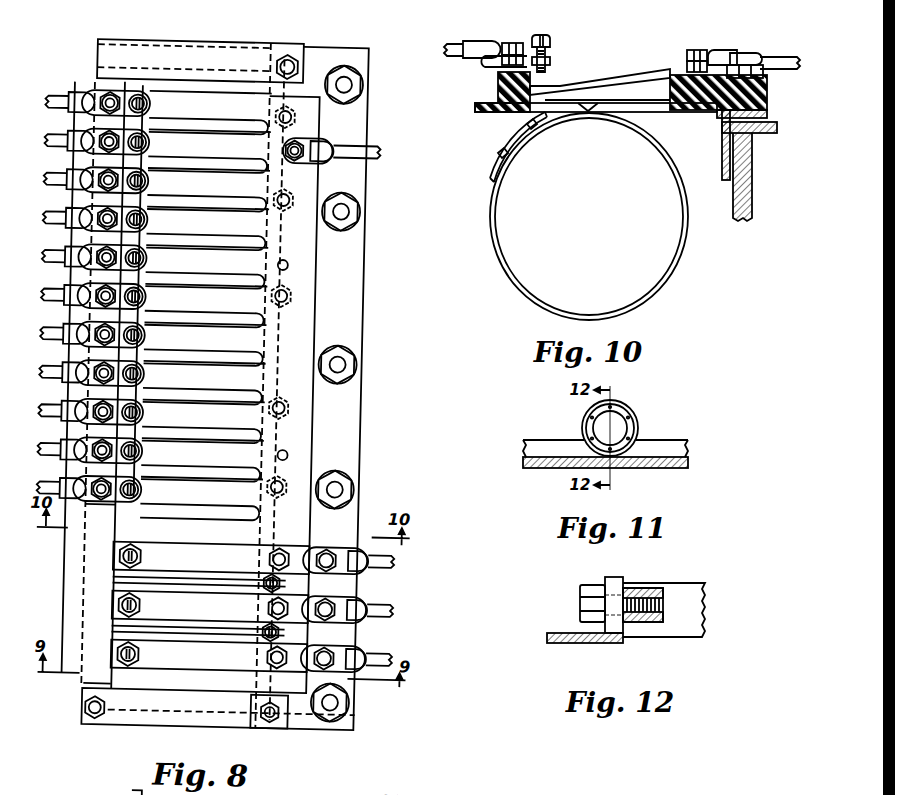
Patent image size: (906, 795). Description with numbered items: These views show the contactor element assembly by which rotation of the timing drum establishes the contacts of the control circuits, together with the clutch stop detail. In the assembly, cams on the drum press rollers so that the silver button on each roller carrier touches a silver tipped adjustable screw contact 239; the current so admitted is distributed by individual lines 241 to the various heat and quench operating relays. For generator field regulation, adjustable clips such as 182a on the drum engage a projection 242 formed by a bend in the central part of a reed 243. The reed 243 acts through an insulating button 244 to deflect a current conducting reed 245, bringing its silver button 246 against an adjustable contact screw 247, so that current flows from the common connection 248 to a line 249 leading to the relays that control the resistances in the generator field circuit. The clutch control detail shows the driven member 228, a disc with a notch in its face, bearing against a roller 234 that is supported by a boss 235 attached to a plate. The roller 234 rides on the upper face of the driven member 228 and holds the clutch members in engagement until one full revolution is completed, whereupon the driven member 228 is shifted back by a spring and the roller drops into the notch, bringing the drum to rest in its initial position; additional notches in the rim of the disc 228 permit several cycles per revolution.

In FIG. 8, the current conducting reed 245 is at (238, 262).
In FIG. 10, the current conducting reed 245 is at (619, 80).
In FIG. 8, the line 249 is at (27, 372).
In FIG. 10, the line 249 is at (470, 31).
In FIG. 8, the adjustable contact screw 247 is at (141, 501).
In FIG. 10, the adjustable contact screw 247 is at (553, 40).
In FIG. 8, the common connection 248 is at (373, 141).
In FIG. 10, the common connection 248 is at (751, 57).
In FIG. 8, the individual line 241 is at (385, 605).
In FIG. 8, the adjustable screw contact 239 is at (154, 791).
In FIG. 10, the silver button 246 is at (560, 88).
In FIG. 10, the insulating button 244 is at (607, 96).
In FIG. 10, the reed 243 is at (642, 112).
In FIG. 10, the projection 242 is at (572, 115).
In FIG. 10, the adjustable clip 182a is at (504, 141).
In FIG. 11, the roller 234 is at (636, 418).
In FIG. 12, the roller 234 is at (618, 578).
In FIG. 11, the driven member 228 is at (650, 471).
In FIG. 12, the driven member 228 is at (631, 642).
In FIG. 12, the boss 235 is at (676, 584).